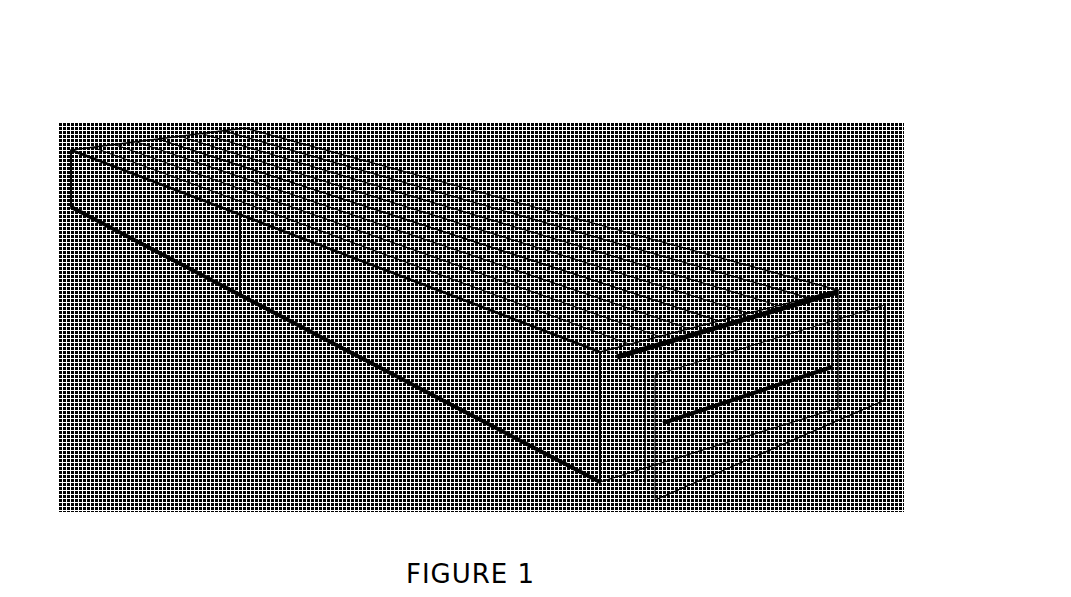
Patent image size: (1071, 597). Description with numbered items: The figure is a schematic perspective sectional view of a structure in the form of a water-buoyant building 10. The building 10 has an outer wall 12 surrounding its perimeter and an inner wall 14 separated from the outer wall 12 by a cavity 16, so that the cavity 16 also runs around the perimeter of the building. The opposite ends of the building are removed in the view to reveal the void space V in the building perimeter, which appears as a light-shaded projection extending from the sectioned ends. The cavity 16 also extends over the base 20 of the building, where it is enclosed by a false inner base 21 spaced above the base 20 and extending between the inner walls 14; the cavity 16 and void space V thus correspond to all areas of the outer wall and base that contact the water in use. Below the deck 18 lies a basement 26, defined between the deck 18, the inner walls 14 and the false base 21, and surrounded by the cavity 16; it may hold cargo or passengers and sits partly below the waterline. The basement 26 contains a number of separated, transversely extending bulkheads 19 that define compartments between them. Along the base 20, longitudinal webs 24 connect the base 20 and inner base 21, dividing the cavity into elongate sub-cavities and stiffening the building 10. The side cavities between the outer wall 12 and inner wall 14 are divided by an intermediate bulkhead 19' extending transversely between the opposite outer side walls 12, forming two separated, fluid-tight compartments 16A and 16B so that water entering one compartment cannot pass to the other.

The water-buoyant building 10 is at (430, 157).
The outer wall 12 is at (532, 402).
The inner wall 14 is at (800, 335).
The cavity 16 is at (605, 457).
The first compartment 16A is at (303, 290).
The second compartment 16B is at (140, 220).
The deck 18 is at (733, 278).
The bulkheads 19 is at (451, 191).
The intermediate bulkhead 19' is at (410, 285).
The base 20 is at (415, 392).
The inner base 21 is at (733, 360).
The longitudinal webs 24 is at (709, 420).
The basement 26 is at (695, 363).
The void space V is at (66, 185).